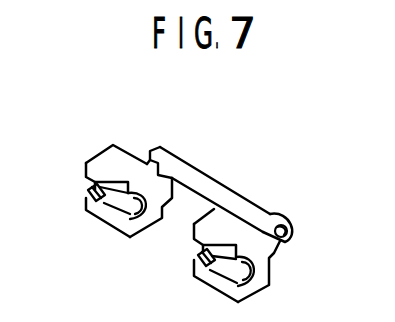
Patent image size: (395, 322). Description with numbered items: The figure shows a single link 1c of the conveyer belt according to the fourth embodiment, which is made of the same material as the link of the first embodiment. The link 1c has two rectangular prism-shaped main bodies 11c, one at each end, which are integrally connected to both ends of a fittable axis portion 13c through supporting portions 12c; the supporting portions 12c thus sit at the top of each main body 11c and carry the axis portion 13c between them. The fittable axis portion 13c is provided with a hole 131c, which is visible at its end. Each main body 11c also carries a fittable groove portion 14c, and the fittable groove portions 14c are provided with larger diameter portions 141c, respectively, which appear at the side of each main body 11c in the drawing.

The link 1c is at (198, 207).
The main body 11c is at (107, 160).
The supporting portion 12c is at (150, 158).
The fittable axis portion 13c is at (209, 173).
The hole 131c is at (297, 236).
The fittable groove portion 14c is at (128, 238).
The larger diameter portion 141c is at (92, 194).